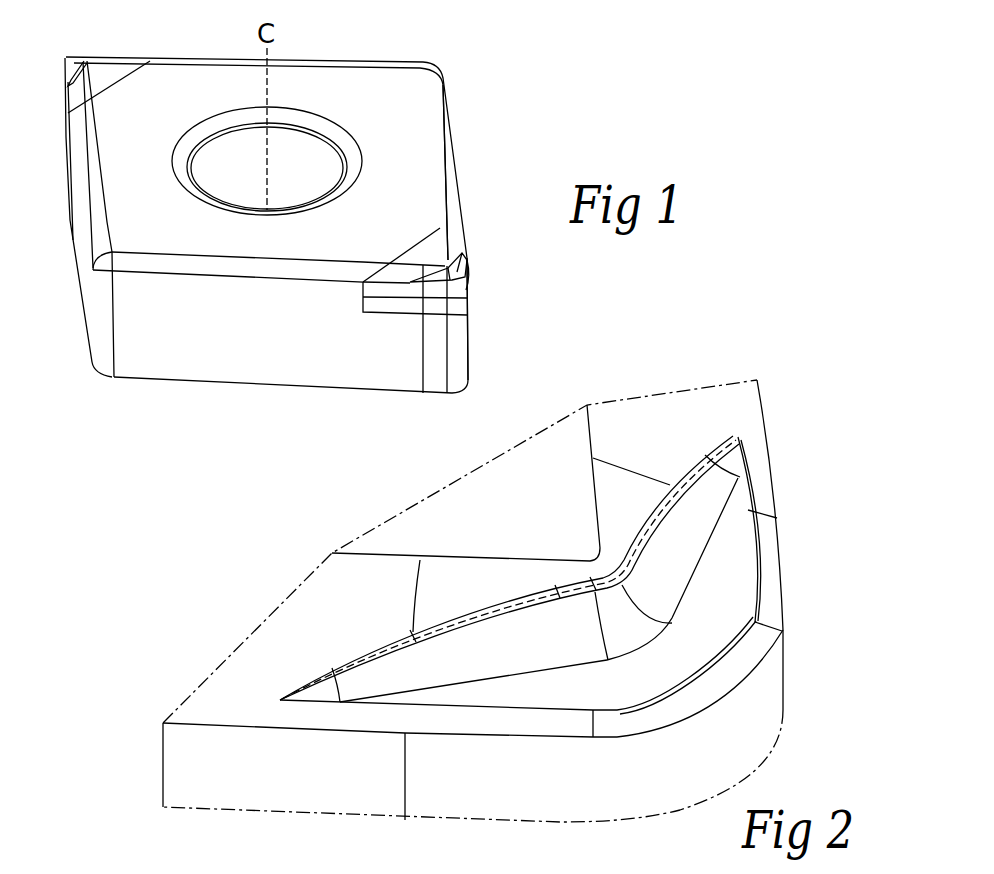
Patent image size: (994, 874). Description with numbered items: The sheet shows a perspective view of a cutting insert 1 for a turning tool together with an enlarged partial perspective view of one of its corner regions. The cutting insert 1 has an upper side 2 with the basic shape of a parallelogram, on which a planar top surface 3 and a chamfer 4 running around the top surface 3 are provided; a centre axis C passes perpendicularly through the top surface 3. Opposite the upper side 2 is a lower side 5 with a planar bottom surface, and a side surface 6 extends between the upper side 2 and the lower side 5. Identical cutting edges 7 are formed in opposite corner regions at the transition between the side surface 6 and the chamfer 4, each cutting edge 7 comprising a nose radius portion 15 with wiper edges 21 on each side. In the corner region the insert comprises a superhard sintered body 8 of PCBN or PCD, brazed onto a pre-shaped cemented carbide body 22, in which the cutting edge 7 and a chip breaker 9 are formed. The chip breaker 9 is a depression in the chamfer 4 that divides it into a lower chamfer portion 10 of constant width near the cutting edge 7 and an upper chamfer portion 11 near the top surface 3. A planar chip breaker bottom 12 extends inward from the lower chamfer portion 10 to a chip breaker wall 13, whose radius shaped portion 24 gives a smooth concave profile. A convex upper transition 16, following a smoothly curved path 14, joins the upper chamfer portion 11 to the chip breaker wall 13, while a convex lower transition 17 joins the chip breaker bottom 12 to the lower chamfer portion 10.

In FIG. 1, the cutting insert 1 is at (408, 52).
In FIG. 1, the upper side 2 is at (396, 127).
In FIG. 1, the top surface 3 is at (398, 181).
In FIG. 2, the top surface 3 is at (521, 504).
In FIG. 1, the chamfer 4 is at (445, 169).
In FIG. 2, the chamfer 4 is at (672, 434).
In FIG. 1, the lower side 5 is at (243, 385).
In FIG. 1, the side surface 6 is at (294, 350).
In FIG. 2, the side surface 6 is at (351, 790).
In FIG. 1, the cutting edge 7 is at (462, 286).
In FIG. 2, the cutting edge 7 is at (643, 735).
In FIG. 1, the superhard sintered body 8 is at (455, 240).
In FIG. 2, the superhard sintered body 8 is at (737, 405).
In FIG. 1, the chip breaker 9 is at (464, 265).
In FIG. 2, the chip breaker 9 is at (707, 487).
In FIG. 2, the lower chamfer portion 10 is at (770, 590).
In FIG. 2, the upper chamfer portion 11 is at (473, 583).
In FIG. 2, the chip breaker bottom 12 is at (713, 623).
In FIG. 2, the chip breaker wall 13 is at (683, 526).
In FIG. 2, the smoothly curved path 14 is at (652, 520).
In FIG. 2, the nose radius portion 15 is at (733, 703).
In FIG. 2, the upper transition 16 is at (573, 598).
In FIG. 2, the lower transition 17 is at (620, 712).
In FIG. 2, the wiper edges 21 is at (783, 572).
In FIG. 1, the cemented carbide body 22 is at (348, 362).
In FIG. 2, the radius shaped portion 24 is at (667, 565).